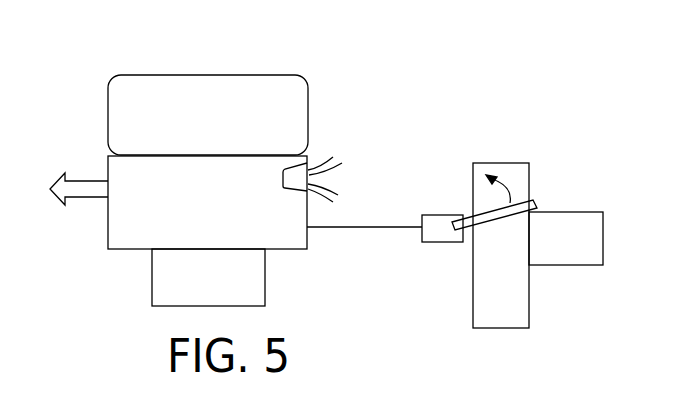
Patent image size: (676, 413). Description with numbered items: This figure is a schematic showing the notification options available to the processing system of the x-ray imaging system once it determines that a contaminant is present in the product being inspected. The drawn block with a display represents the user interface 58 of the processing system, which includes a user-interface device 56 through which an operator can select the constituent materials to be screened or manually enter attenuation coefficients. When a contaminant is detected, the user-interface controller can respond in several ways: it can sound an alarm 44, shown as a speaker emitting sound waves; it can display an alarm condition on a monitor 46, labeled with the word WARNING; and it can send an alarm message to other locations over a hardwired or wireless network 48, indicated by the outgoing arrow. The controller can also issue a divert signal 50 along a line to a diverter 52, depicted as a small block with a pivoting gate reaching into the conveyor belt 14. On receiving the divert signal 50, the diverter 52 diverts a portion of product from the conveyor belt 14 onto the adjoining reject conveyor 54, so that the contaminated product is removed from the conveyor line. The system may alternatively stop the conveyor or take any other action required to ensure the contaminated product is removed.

The conveyor belt 14 is at (502, 323).
The alarm 44 is at (303, 168).
The monitor 46 is at (230, 83).
The hardwired or wireless network 48 is at (87, 182).
The divert signal 50 is at (355, 230).
The diverter 52 is at (455, 213).
The reject conveyor 54 is at (572, 262).
The user-interface device 56 is at (265, 297).
The user interface 58 is at (388, 78).